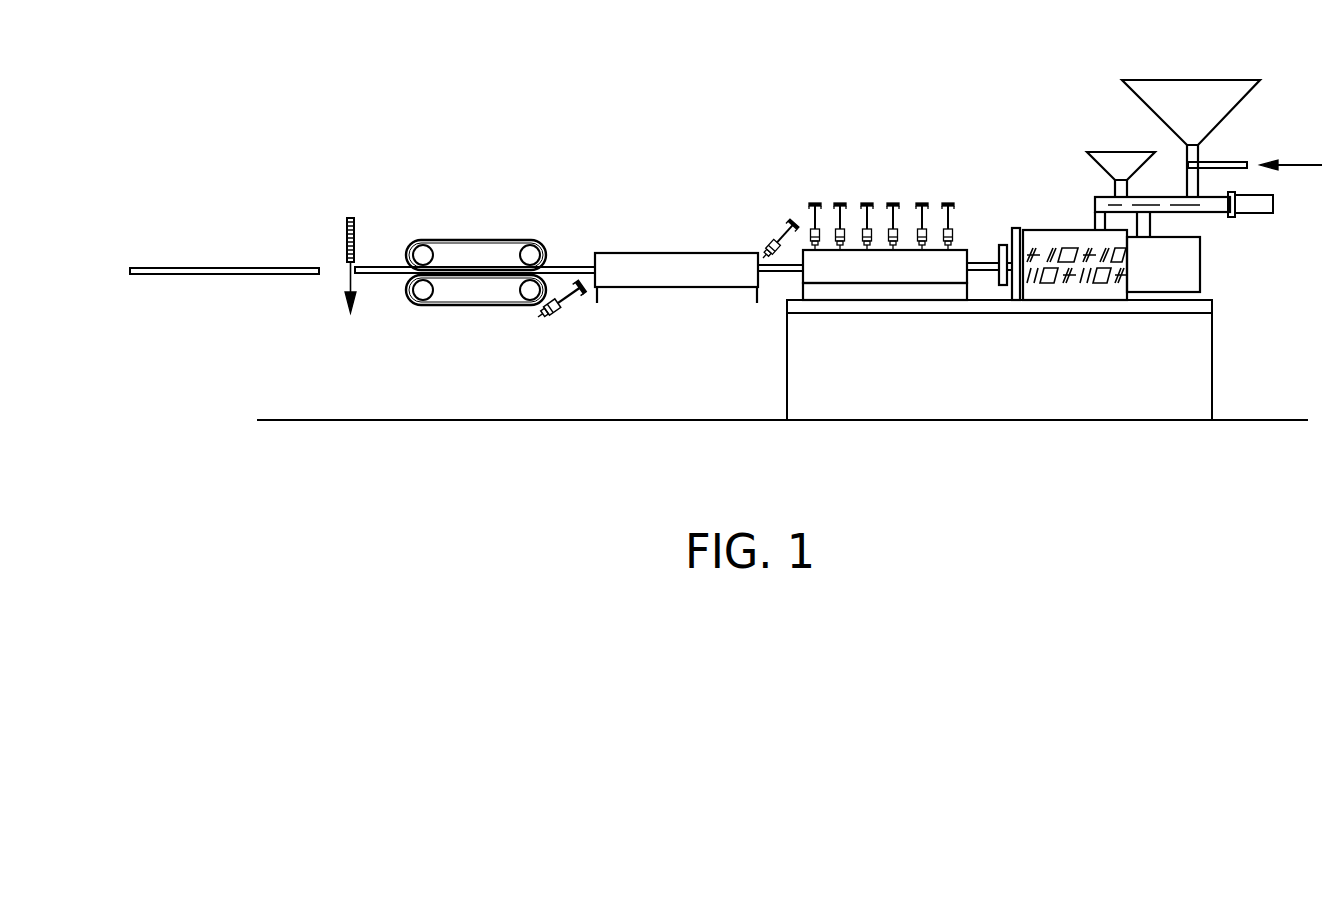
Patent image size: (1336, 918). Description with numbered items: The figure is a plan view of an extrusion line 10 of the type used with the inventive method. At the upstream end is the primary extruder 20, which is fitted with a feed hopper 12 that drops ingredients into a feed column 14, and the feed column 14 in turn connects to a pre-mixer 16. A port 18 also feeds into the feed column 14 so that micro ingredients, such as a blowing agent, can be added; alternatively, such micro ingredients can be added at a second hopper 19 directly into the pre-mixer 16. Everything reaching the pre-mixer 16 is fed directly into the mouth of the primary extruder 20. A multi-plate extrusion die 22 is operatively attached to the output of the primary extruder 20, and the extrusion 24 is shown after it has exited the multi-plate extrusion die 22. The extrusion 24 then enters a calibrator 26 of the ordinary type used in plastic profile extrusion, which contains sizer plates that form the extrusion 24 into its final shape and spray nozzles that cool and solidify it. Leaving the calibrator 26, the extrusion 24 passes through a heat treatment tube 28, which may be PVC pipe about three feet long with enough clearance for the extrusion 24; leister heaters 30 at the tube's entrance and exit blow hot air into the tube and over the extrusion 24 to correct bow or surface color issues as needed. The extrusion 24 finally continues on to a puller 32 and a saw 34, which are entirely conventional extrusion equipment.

The extrusion line 10 is at (728, 361).
The feed hopper 12 is at (1136, 100).
The feed column 14 is at (1199, 150).
The pre-mixer 16 is at (1184, 242).
The port 18 is at (1238, 161).
The hopper 19 is at (1108, 151).
The primary extruder 20 is at (1063, 229).
The multi-plate extrusion die 22 is at (1006, 245).
The extrusion 24 is at (247, 268).
The calibrator 26 is at (803, 284).
The heat treatment tube 28 is at (628, 253).
The leister heaters 30 is at (781, 236).
The puller 32 is at (462, 240).
The saw 34 is at (352, 218).